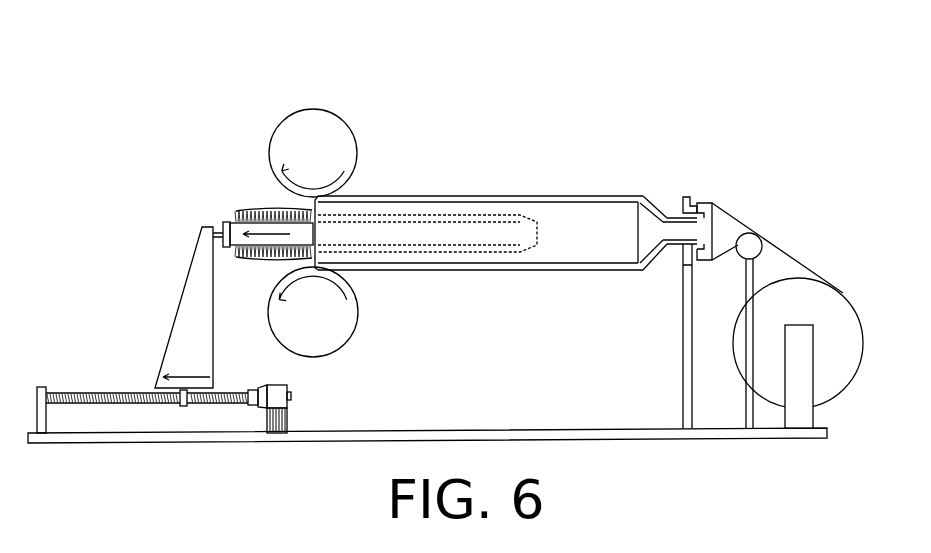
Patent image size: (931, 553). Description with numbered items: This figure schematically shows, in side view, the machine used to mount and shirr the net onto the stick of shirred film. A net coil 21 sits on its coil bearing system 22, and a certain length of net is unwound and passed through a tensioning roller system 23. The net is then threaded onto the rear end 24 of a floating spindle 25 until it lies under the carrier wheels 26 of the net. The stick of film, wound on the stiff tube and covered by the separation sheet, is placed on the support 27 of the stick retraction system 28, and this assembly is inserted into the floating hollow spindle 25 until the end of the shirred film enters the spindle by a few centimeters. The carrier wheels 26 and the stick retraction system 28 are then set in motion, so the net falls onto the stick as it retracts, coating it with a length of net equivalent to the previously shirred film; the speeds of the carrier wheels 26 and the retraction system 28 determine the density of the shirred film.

The net coil 21 is at (828, 315).
The coil bearing system 22 is at (798, 375).
The tensioning roller system 23 is at (763, 235).
The rear end of floating spindle 24 is at (697, 196).
The floating spindle 25 is at (652, 220).
The carrier wheels 26 is at (322, 133).
The support 27 is at (225, 215).
The stick retraction system 28 is at (176, 318).